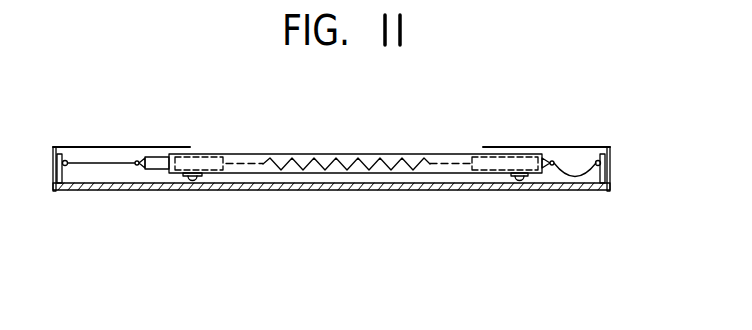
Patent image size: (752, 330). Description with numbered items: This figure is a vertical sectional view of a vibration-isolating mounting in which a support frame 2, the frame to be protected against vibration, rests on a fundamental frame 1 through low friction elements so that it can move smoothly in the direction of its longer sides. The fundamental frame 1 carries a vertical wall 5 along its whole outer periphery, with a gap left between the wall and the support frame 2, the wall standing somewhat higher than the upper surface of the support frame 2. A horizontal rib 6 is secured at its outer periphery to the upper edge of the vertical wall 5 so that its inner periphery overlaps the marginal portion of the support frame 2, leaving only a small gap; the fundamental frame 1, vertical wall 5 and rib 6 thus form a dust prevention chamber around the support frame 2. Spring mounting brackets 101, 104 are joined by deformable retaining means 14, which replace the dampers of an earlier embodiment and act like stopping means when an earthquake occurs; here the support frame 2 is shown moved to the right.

The fundamental frame 1 is at (428, 194).
The support frame 2 is at (291, 146).
The vertical wall 5 is at (611, 163).
The horizontal rib 6 is at (573, 147).
The retaining means 14 is at (107, 163).
The spring mounting bracket 101 is at (500, 154).
The spring mounting bracket 104 is at (208, 154).